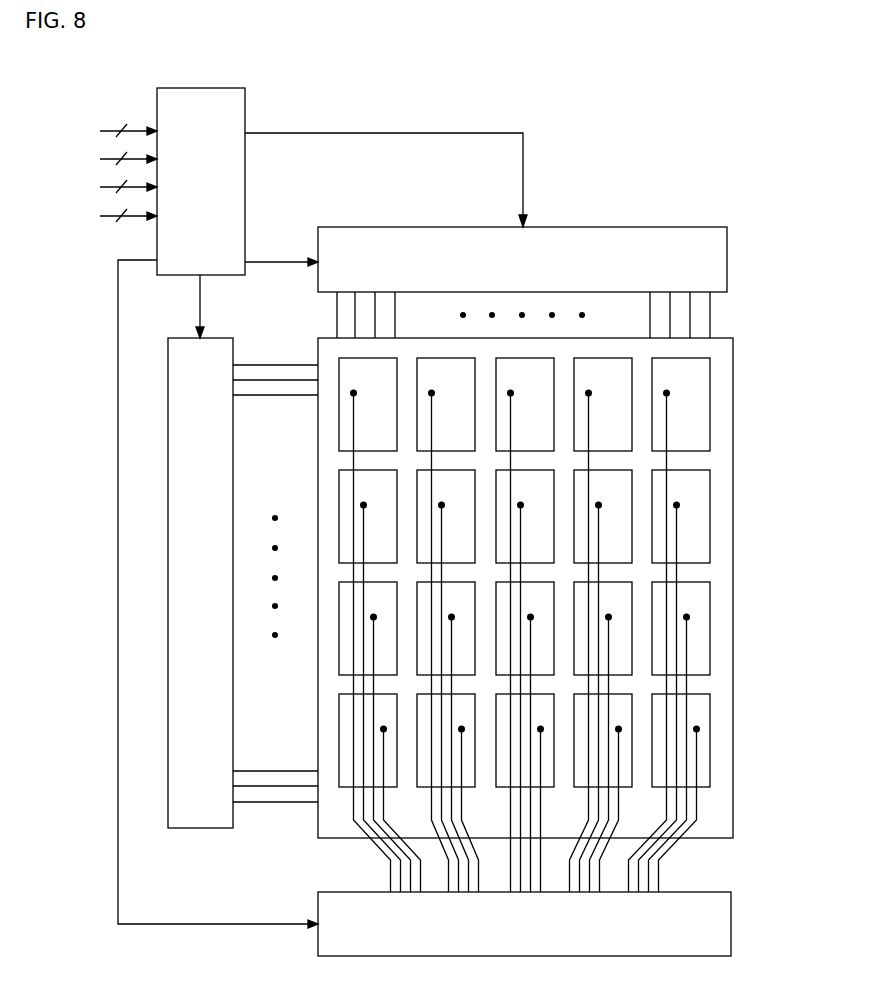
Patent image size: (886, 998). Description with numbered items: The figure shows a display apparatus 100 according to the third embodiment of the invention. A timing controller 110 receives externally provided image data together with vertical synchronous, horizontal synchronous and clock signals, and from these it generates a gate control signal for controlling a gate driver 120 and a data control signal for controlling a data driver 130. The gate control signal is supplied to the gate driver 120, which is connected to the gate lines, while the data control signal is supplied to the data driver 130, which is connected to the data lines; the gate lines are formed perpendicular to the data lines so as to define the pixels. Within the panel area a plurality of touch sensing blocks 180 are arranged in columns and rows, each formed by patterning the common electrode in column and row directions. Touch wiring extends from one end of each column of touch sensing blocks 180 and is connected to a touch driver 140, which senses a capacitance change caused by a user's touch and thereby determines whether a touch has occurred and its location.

The display device 100 is at (714, 61).
The timing controller 110 is at (217, 195).
The gate driver 120 is at (217, 588).
The data driver 130 is at (538, 270).
The touch driver 140 is at (540, 933).
The touch sensing block 180 is at (710, 403).